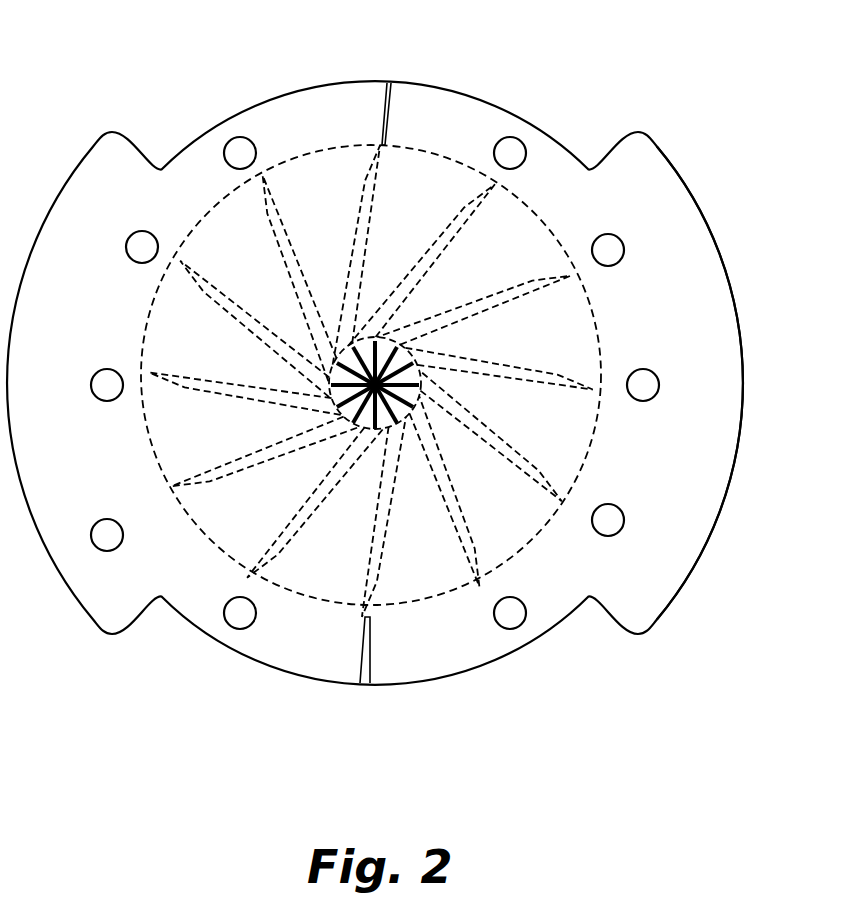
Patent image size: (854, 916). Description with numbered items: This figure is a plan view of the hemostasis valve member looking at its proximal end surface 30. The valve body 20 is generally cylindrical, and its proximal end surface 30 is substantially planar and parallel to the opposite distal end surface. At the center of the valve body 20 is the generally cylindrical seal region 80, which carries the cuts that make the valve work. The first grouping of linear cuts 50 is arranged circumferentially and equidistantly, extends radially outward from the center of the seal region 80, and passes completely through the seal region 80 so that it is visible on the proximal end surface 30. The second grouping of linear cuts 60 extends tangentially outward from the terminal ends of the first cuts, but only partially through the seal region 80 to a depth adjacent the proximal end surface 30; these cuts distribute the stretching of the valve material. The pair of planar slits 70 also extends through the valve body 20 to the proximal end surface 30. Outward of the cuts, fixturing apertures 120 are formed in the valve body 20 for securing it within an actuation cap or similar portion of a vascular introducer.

The valve body 20 is at (183, 185).
The proximal end surface 30 is at (667, 567).
The first grouping of linear cuts 50 is at (350, 429).
The second grouping of linear cuts 60 is at (137, 347).
The pair of planar slits 70 is at (392, 103).
The seal region 80 is at (297, 393).
The fixturing apertures 120 is at (613, 248).